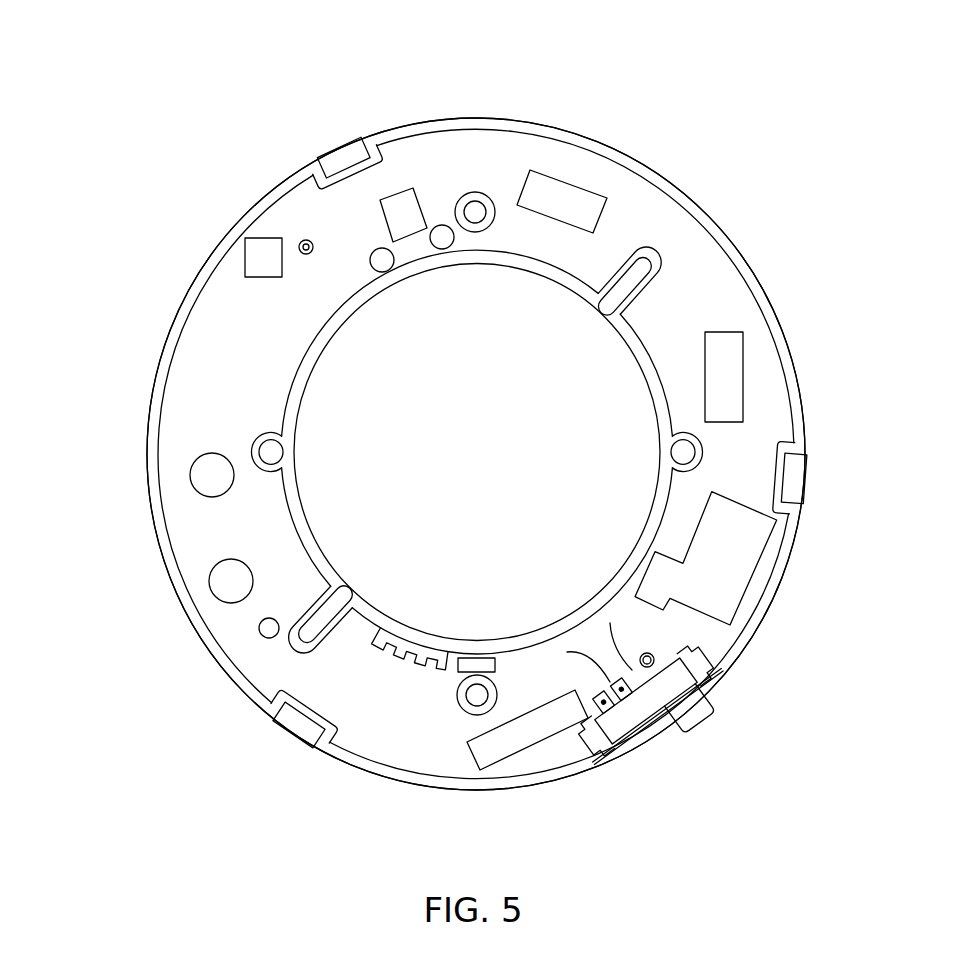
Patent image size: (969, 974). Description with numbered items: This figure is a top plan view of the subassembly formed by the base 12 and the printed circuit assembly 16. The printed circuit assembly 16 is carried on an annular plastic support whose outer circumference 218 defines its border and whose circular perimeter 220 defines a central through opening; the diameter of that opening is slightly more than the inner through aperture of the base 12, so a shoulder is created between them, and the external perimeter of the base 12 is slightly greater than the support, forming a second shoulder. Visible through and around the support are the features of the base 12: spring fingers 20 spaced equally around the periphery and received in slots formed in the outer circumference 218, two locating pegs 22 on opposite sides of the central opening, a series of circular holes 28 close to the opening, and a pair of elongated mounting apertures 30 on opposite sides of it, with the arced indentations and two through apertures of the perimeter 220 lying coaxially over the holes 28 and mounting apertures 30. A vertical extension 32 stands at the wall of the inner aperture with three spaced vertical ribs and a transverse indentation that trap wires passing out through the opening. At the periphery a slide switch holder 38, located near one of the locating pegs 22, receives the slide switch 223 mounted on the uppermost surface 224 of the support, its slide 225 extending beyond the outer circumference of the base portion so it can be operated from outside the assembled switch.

The base 12 is at (245, 205).
The printed circuit assembly 16 is at (730, 248).
The spring fingers 20 is at (340, 143).
The locating pegs 22 is at (305, 240).
The through circular holes 28 is at (475, 200).
The elongated mounting apertures 30 is at (642, 280).
The vertical extension 32 is at (408, 630).
The slide switch holder 38 is at (717, 690).
The outer circumference 218 is at (178, 337).
The circular perimeter 220 is at (318, 335).
The slide switch 223 is at (623, 725).
The uppermost surface 224 is at (188, 543).
The slide 225 is at (672, 752).